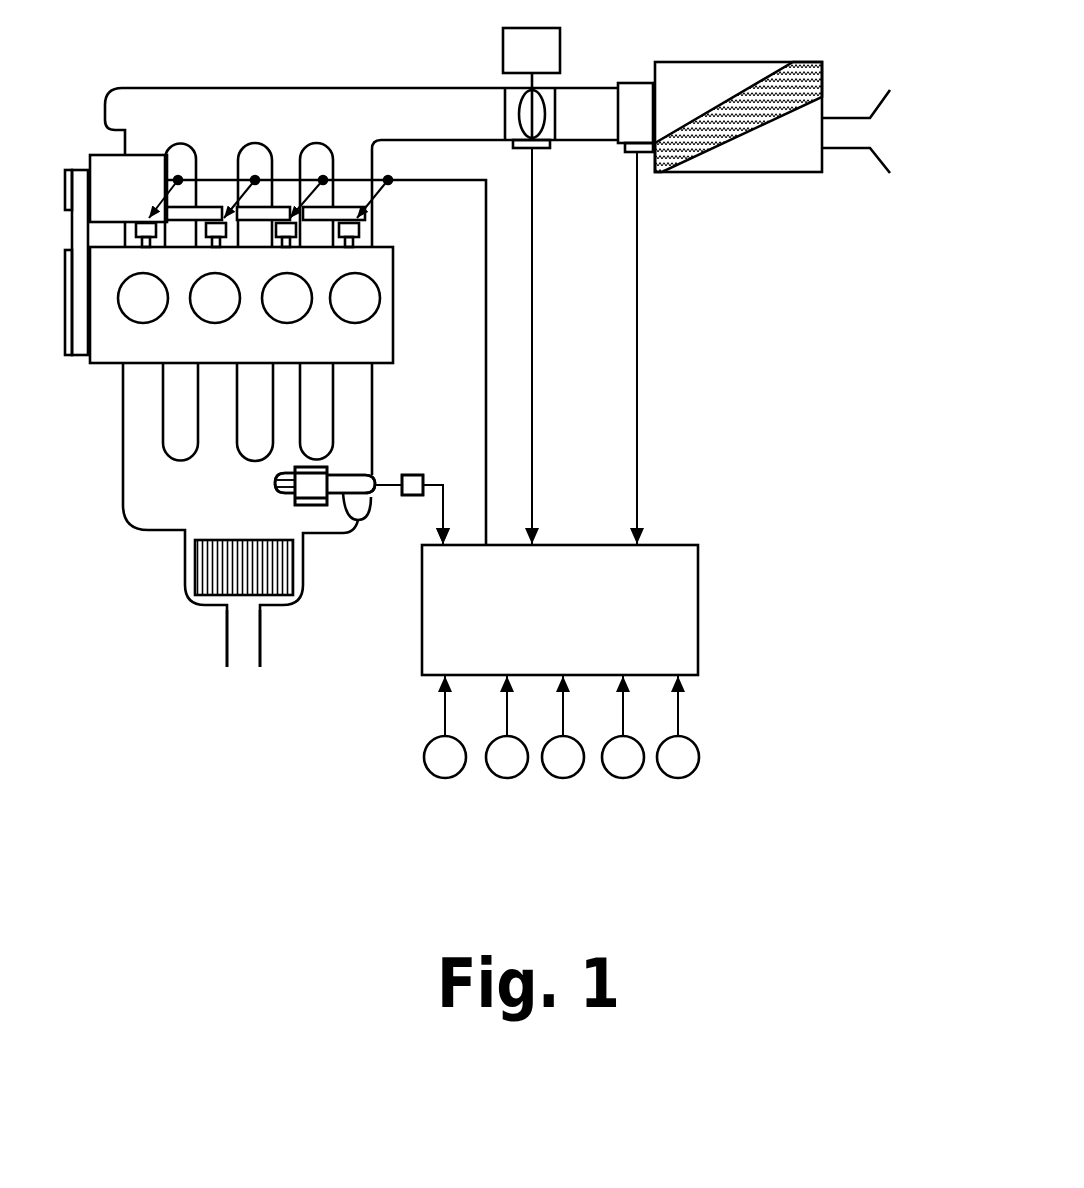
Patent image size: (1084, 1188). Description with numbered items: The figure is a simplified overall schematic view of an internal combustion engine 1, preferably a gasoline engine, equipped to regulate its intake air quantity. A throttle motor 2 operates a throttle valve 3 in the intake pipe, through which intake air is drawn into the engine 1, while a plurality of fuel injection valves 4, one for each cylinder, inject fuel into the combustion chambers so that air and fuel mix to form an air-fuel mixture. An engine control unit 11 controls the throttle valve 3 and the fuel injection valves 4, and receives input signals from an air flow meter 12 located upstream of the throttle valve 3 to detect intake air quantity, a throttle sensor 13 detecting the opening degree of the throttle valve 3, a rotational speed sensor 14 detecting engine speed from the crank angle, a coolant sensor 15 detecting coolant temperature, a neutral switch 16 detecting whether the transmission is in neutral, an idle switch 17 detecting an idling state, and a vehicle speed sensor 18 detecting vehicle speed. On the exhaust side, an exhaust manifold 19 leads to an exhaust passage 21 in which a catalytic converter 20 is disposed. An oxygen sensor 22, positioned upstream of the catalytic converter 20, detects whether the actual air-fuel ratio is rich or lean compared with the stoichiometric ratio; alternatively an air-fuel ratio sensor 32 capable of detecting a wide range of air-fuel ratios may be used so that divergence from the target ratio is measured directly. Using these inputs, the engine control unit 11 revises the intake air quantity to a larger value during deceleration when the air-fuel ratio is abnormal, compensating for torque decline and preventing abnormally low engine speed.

The internal combustion engine 1 is at (105, 410).
The throttle motor 2 is at (503, 43).
The throttle valve 3 is at (518, 107).
The fuel injection valves 4 is at (370, 235).
The engine control unit 11 is at (700, 577).
The air flow meter 12 is at (633, 84).
The throttle sensor 13 is at (552, 145).
The rotational speed sensor 14 is at (445, 778).
The coolant sensor 15 is at (507, 778).
The neutral switch 16 is at (563, 778).
The idle switch 17 is at (623, 778).
The vehicle speed sensor 18 is at (678, 778).
The exhaust manifold 19 is at (125, 516).
The catalytic converter 20 is at (293, 578).
The exhaust passage 21 is at (265, 642).
The oxygen sensor 22 is at (358, 520).
The air-fuel ratio sensor 32 is at (359, 505).